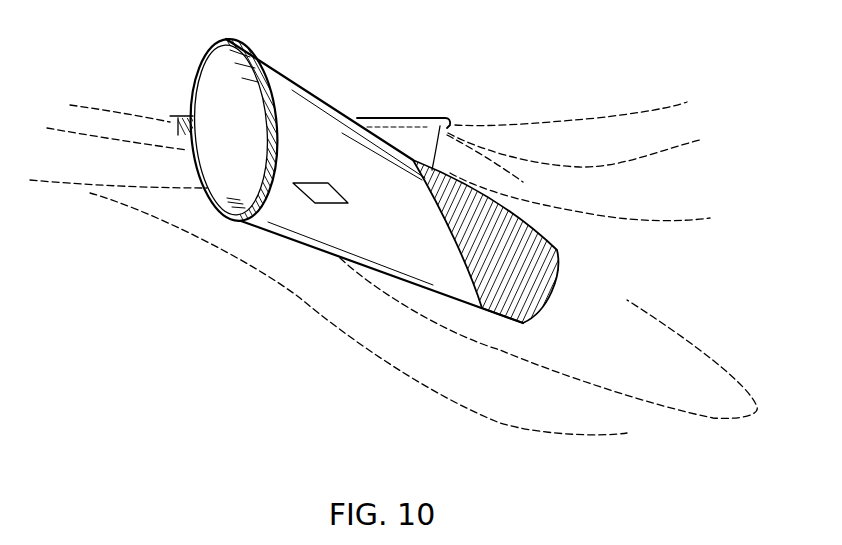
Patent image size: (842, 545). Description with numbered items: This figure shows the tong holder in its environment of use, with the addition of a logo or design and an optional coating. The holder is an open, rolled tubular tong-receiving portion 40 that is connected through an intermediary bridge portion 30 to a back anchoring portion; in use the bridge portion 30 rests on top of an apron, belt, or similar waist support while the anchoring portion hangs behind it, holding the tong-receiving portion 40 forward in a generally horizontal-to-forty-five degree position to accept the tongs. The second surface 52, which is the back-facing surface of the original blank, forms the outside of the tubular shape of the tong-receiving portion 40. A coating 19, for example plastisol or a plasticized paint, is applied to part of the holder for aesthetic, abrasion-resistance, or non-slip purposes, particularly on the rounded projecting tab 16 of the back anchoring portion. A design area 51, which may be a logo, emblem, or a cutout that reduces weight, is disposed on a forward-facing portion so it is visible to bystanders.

The projecting tab 16 is at (180, 133).
The coating 19 is at (267, 126).
The intermediary bridge portion 30 is at (392, 105).
The tong-receiving portion 40 is at (201, 198).
The design area 51 is at (320, 195).
The second surface 52 is at (409, 223).